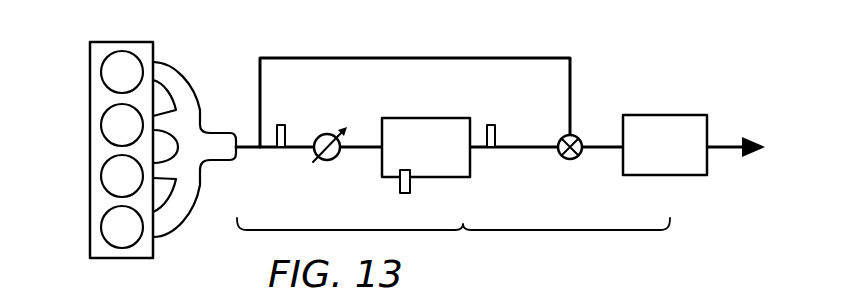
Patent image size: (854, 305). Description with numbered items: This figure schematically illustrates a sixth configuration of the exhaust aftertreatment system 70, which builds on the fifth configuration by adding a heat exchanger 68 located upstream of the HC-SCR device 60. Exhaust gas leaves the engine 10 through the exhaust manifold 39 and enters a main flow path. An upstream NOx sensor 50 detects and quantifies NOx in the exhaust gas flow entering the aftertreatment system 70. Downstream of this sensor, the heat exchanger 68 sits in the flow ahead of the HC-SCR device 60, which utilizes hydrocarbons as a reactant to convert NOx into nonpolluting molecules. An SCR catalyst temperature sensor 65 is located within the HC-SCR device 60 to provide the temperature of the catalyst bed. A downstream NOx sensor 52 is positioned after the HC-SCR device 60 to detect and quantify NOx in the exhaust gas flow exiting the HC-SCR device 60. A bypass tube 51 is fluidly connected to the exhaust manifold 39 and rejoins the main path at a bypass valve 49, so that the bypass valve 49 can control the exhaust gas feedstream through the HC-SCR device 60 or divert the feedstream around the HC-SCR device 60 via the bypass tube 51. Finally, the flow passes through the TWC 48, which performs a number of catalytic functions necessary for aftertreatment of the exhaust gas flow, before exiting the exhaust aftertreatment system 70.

The engine 10 is at (84, 86).
The exhaust manifold 39 is at (192, 95).
The bypass tube 51 is at (400, 57).
The upstream NOx sensor 50 is at (286, 132).
The heat exchanger 68 is at (322, 136).
The HC-SCR device 60 is at (428, 128).
The SCR catalyst temperature sensor 65 is at (410, 184).
The downstream NOx sensor 52 is at (496, 136).
The bypass valve 49 is at (573, 158).
The TWC 48 is at (680, 123).
The exhaust aftertreatment system 70 is at (463, 228).